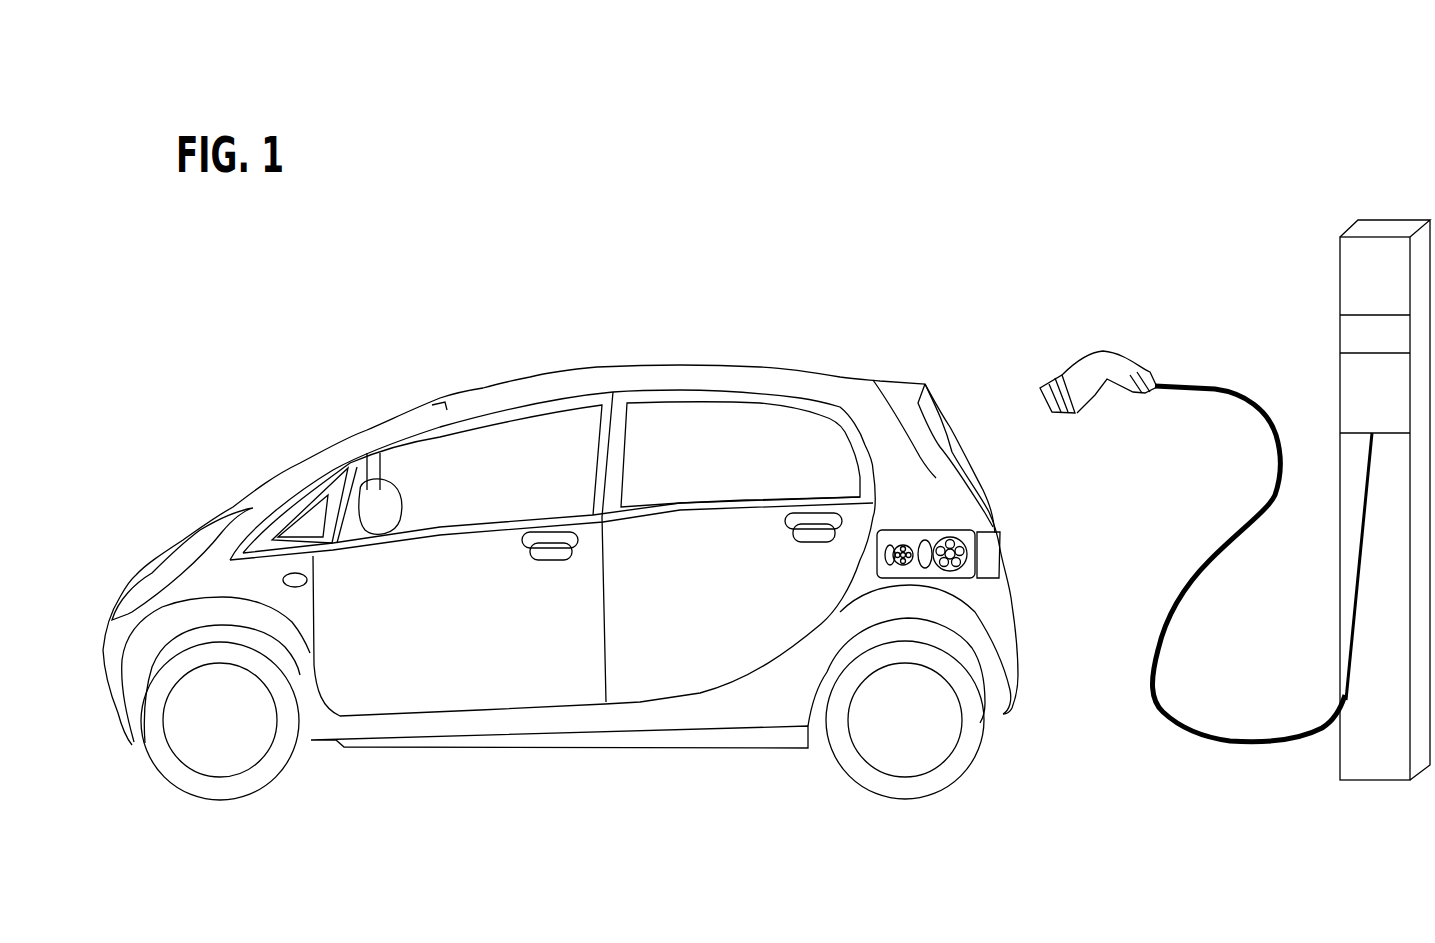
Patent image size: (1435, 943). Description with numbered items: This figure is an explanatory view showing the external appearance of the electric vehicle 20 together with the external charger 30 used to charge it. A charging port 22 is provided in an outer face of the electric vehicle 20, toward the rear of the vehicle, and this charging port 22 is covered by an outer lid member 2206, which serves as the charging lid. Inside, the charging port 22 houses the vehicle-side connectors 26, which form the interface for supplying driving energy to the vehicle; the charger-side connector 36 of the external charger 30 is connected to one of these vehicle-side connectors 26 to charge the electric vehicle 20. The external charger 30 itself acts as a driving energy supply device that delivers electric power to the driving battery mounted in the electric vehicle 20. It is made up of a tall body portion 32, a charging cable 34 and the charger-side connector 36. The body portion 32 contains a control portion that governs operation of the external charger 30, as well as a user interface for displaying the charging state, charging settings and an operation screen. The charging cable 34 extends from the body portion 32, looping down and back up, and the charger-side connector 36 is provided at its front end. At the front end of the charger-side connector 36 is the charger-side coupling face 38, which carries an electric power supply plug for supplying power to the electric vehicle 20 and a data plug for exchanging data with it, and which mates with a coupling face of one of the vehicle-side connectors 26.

The electric vehicle 20 is at (483, 388).
The charging port 22 is at (907, 521).
The vehicle-side connectors 26 is at (932, 531).
The outer lid member 2206 is at (1003, 560).
The external charger 30 is at (1291, 219).
The body portion 32 is at (1358, 739).
The charging cable 34 is at (1238, 730).
The charger-side connector 36 is at (1115, 386).
The charger-side coupling face 38 is at (1047, 402).